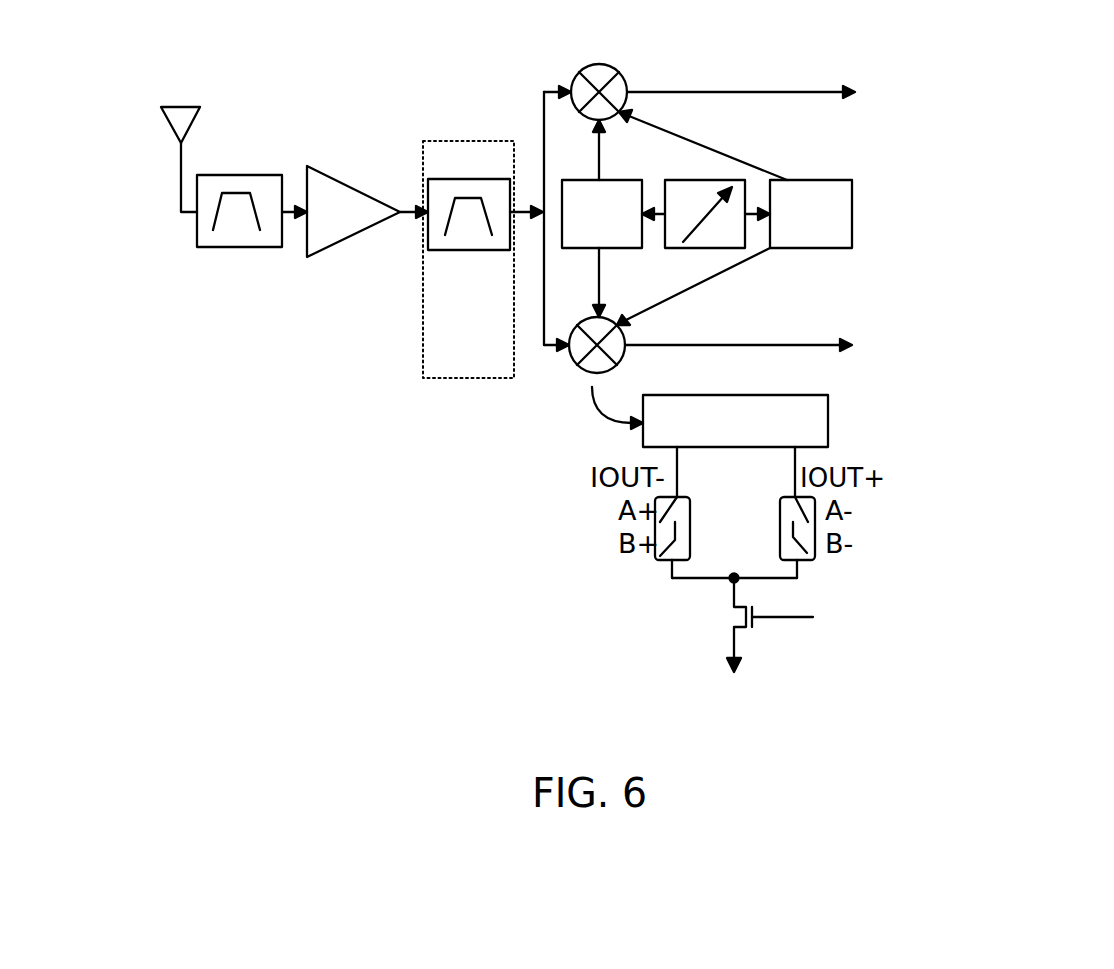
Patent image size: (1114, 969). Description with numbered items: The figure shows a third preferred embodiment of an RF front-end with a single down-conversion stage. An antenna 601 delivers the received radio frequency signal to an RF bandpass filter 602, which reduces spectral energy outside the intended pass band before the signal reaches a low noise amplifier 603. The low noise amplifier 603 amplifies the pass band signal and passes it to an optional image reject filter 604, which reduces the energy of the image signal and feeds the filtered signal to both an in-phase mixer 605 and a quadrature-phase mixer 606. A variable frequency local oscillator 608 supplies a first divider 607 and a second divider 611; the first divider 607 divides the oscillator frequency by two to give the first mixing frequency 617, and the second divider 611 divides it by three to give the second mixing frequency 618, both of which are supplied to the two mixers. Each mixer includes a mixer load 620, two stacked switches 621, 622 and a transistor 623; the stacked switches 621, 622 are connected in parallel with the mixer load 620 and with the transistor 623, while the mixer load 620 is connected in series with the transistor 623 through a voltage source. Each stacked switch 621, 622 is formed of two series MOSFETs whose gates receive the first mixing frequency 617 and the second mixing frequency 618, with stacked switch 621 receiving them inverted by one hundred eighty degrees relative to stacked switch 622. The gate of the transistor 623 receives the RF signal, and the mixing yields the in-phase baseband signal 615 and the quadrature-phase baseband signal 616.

The antenna 601 is at (183, 152).
The RF bandpass filter 602 is at (195, 230).
The low noise amplifier 603 is at (352, 237).
The image reject filter 604 is at (423, 368).
The in-phase mixer 605 is at (602, 62).
The quadrature-phase mixer 606 is at (622, 365).
The first divider 607 is at (613, 178).
The variable frequency local oscillator 608 is at (705, 178).
The second divider 611 is at (852, 214).
The in-phase baseband signal 615 is at (788, 92).
The quadrature-phase baseband signal 616 is at (787, 343).
The first mixing frequency 617 is at (599, 160).
The second mixing frequency 618 is at (770, 178).
The mixer load 620 is at (828, 422).
The stacked switch 621 is at (690, 503).
The stacked switch 622 is at (780, 555).
The transistor 623 is at (705, 619).